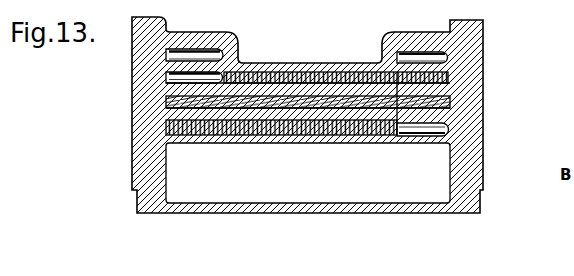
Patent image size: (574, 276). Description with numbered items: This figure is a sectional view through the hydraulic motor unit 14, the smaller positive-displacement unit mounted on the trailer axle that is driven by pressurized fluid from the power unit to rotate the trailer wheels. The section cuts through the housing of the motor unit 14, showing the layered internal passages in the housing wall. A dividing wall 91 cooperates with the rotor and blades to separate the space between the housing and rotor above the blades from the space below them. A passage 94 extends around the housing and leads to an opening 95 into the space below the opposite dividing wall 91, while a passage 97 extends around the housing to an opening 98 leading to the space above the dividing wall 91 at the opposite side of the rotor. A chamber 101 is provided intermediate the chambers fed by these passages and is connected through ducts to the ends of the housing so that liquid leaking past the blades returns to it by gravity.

The hydraulic motor unit 14 is at (483, 24).
The dividing wall 91 is at (448, 100).
The passage 94 is at (448, 53).
The opening 95 is at (357, 135).
The passage 97 is at (198, 49).
The opening 98 is at (286, 71).
The chamber 101 is at (302, 190).